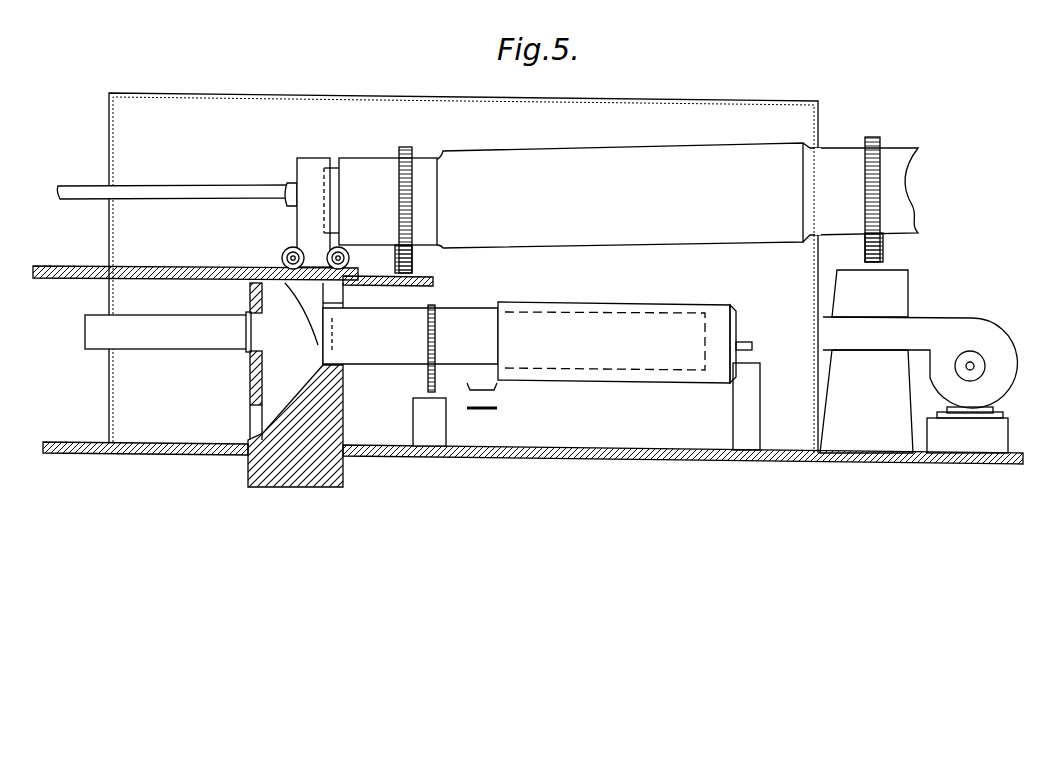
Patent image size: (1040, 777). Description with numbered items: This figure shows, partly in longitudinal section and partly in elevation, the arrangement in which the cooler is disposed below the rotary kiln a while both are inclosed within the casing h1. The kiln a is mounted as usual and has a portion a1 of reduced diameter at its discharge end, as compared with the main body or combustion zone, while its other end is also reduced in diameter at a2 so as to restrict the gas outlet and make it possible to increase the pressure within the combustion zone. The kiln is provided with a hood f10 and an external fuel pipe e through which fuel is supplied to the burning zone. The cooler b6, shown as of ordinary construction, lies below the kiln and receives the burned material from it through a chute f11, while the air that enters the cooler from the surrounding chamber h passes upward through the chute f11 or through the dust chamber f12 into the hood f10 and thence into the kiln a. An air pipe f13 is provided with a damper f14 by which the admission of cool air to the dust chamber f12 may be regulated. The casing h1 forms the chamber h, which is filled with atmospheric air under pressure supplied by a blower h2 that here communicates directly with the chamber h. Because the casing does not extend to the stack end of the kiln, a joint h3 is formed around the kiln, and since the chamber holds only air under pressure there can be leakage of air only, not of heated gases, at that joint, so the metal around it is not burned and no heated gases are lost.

The casing h1 is at (628, 101).
The joint h3 is at (823, 146).
The chamber h is at (770, 296).
The blower h2 is at (988, 312).
The external fuel pipe e is at (187, 194).
The hood f10 is at (308, 177).
The reduced-diameter discharge portion a1 is at (388, 210).
The rotary kiln a is at (620, 195).
The reduced end portion a2 is at (860, 199).
The air pipe f13 is at (228, 342).
The damper f14 is at (165, 322).
The chute f11 is at (305, 308).
The dust chamber f12 is at (278, 387).
The cooler b6 is at (541, 376).
The tray g is at (485, 388).